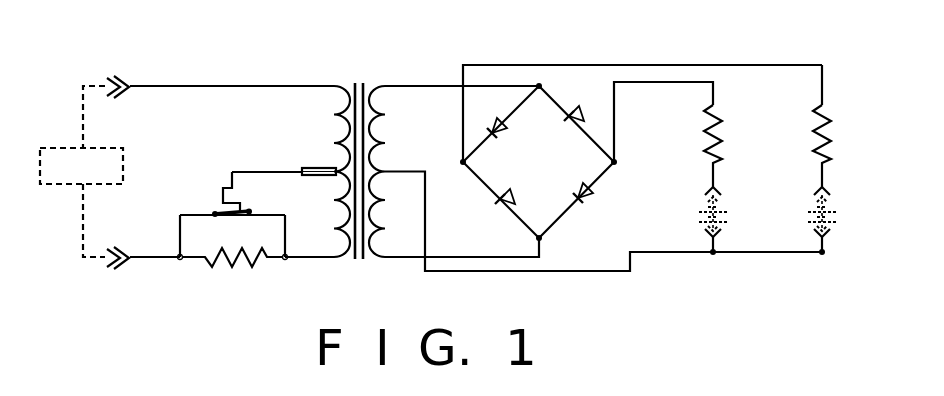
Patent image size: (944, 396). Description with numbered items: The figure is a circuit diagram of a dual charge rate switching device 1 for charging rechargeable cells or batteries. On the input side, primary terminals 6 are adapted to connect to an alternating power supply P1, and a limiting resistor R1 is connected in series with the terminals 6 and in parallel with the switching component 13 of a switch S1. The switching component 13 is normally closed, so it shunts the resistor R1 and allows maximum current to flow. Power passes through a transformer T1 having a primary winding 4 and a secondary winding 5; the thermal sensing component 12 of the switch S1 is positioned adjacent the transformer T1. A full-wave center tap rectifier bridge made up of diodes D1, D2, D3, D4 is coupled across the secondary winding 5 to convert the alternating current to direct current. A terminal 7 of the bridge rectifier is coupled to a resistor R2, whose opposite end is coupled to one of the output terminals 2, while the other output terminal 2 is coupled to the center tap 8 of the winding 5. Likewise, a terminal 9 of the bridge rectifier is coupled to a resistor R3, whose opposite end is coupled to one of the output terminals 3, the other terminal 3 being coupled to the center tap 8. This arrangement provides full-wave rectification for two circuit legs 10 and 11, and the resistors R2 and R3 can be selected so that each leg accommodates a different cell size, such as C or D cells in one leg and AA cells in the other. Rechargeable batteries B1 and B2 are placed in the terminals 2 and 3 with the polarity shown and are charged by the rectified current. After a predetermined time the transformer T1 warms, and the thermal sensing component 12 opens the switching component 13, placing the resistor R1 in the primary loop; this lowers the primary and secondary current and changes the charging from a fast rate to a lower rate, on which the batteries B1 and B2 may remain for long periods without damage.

The dual charge rate switching device 1 is at (465, 58).
The output terminals 2 is at (717, 190).
The output terminals 3 is at (818, 192).
The primary winding 4 is at (333, 88).
The secondary winding 5 is at (378, 83).
The primary terminals 6 is at (150, 86).
The terminal of the bridge rectifier 7 is at (587, 162).
The center tap 8 is at (386, 171).
The terminal of the bridge rectifier 9 is at (462, 160).
The circuit leg 10 is at (683, 84).
The circuit leg 11 is at (824, 90).
The thermal sensing component 12 is at (316, 168).
The switching component 13 is at (285, 223).
The alternating power supply P1 is at (63, 147).
The limiting resistor R1 is at (222, 258).
The resistor R2 is at (722, 144).
The resistor R3 is at (830, 142).
The switch S1 is at (240, 211).
The transformer T1 is at (353, 81).
The rectifier diode D1 is at (500, 134).
The rectifier diode D2 is at (576, 112).
The rectifier diode D3 is at (514, 203).
The rectifier diode D4 is at (592, 202).
The rechargeable battery B1 is at (728, 212).
The rechargeable battery B2 is at (840, 212).